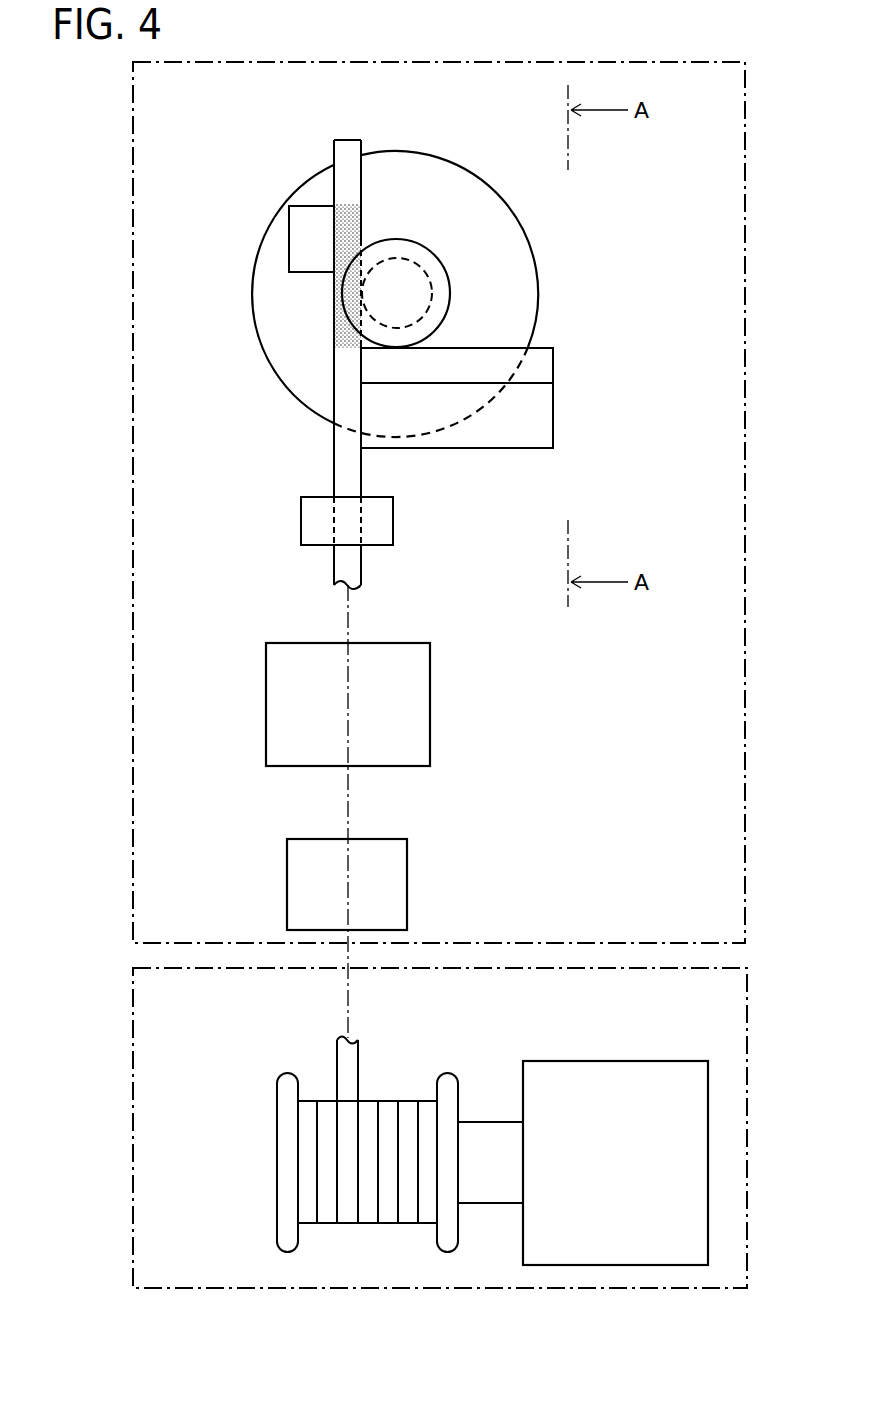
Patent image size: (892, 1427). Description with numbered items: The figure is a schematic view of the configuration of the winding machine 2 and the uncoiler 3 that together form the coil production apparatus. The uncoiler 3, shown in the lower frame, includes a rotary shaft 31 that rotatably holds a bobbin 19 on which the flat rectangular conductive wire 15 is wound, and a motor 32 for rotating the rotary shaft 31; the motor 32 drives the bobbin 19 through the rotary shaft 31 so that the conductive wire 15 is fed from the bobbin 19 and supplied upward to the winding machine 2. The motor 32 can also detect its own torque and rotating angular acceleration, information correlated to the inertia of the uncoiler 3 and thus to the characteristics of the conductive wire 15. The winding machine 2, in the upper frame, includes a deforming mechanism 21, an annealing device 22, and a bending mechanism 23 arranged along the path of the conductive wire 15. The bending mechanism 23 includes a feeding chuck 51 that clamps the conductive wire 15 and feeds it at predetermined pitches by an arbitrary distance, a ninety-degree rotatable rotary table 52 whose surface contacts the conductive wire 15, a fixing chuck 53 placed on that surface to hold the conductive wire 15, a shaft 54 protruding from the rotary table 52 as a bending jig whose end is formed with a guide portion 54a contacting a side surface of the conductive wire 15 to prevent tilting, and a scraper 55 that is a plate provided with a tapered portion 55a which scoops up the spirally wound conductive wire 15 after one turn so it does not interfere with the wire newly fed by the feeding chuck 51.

The winding machine 2 is at (748, 145).
The uncoiler 3 is at (748, 1058).
The flat rectangular conductive wire 15 is at (340, 467).
The bobbin 19 is at (283, 1129).
The deforming mechanism 21 is at (421, 873).
The annealing device 22 is at (444, 715).
The bending mechanism 23 is at (600, 380).
The rotary shaft 31 is at (493, 1197).
The motor 32 is at (618, 1068).
The feeding chuck 51 is at (406, 525).
The rotary table 52 is at (505, 243).
The fixing chuck 53 is at (292, 226).
The shaft 54 is at (405, 258).
The guide portion 54a is at (438, 288).
The scraper 55 is at (548, 407).
The tapered portion 55a is at (548, 363).